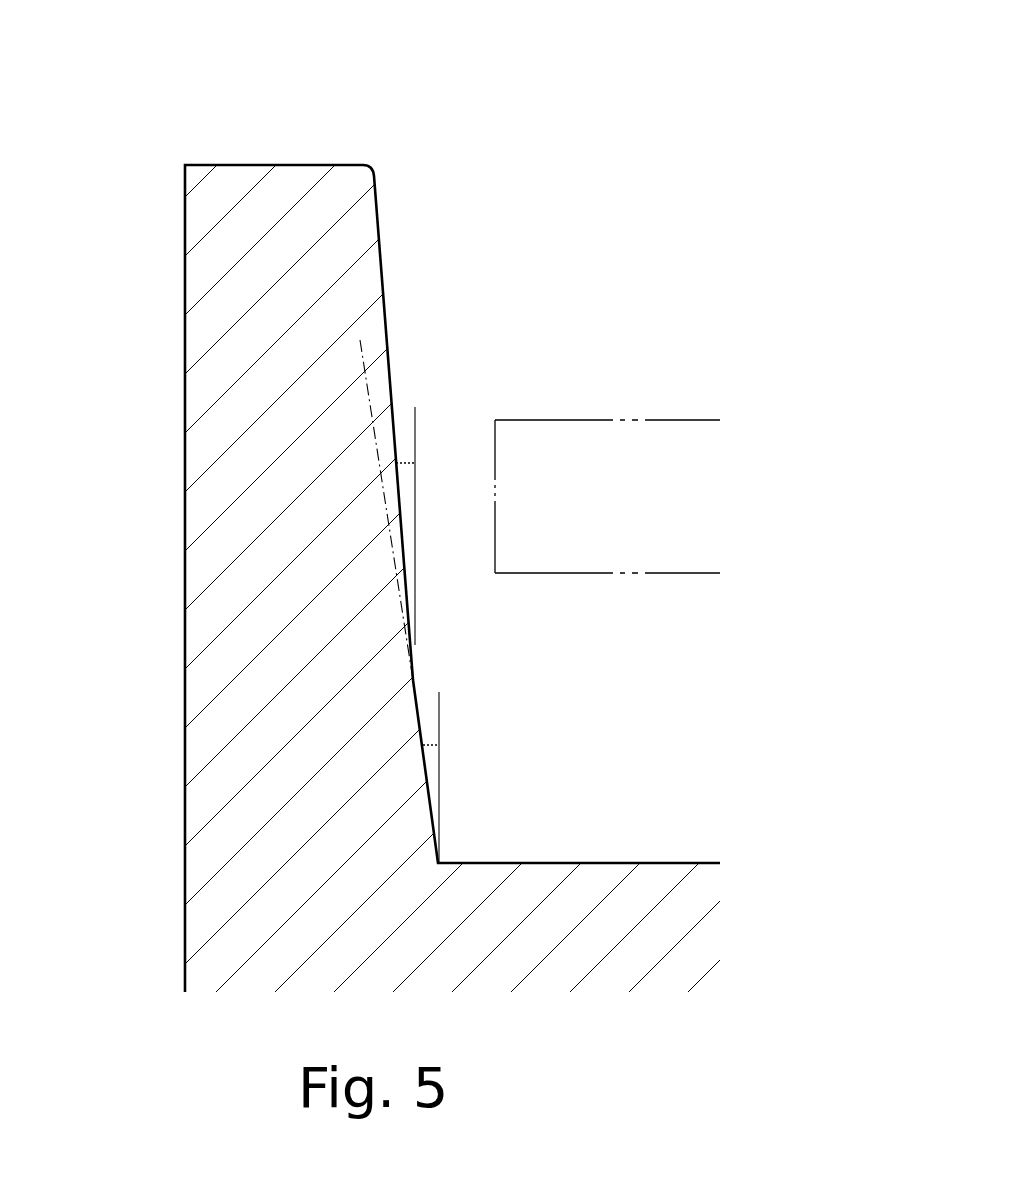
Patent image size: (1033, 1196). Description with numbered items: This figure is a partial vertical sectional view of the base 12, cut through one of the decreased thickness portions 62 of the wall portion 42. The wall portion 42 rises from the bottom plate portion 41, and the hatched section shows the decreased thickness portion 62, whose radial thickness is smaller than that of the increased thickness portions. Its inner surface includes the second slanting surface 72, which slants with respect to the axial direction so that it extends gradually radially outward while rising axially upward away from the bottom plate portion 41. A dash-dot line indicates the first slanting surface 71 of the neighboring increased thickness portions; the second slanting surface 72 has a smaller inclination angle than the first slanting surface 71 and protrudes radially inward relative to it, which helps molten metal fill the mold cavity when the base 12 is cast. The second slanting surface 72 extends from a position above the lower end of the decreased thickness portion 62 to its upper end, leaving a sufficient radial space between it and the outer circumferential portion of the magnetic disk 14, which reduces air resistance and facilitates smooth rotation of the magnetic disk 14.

The base 12 is at (143, 153).
The wall portion 42 is at (280, 145).
The second slanting surface 72 is at (382, 258).
The first slanting surface 71 is at (372, 382).
The decreased thickness portion 62 is at (275, 500).
The magnetic disk 14 is at (598, 573).
The bottom plate portion 41 is at (635, 905).